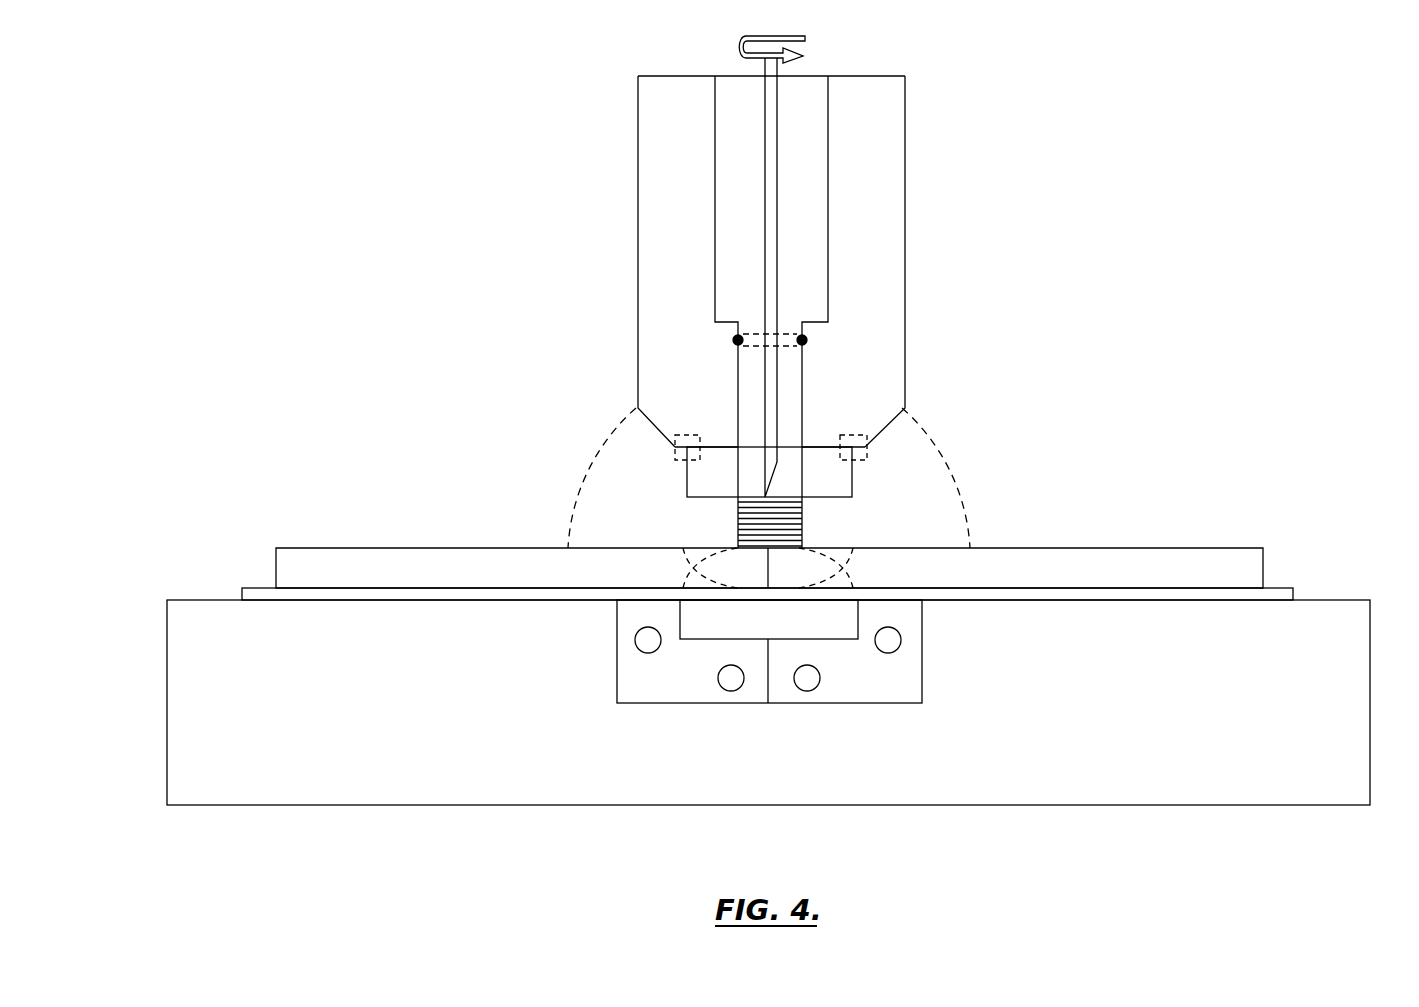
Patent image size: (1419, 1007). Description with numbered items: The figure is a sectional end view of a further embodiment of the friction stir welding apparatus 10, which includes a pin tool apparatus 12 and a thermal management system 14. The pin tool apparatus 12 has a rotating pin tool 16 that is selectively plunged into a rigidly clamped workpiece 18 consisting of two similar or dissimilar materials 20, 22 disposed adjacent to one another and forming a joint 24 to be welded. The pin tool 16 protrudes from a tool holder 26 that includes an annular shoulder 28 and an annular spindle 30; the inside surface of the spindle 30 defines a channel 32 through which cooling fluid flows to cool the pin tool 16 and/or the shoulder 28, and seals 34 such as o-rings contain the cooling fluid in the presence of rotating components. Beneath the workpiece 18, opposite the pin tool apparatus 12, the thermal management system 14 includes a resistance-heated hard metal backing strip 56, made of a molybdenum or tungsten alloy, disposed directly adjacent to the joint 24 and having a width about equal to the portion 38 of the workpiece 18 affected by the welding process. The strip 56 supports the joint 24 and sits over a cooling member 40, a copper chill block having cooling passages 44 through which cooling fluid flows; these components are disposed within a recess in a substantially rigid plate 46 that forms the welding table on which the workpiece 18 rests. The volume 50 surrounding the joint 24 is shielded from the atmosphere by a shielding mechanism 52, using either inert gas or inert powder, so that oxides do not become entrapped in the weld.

The friction stir welding apparatus 10 is at (1140, 283).
The pin tool apparatus 12 is at (925, 127).
The thermal management system 14 is at (885, 572).
The rotating pin tool 16 is at (852, 460).
The workpiece 18 is at (1175, 550).
The material 20 is at (1140, 550).
The material 22 is at (403, 548).
The joint 24 is at (768, 570).
The tool holder 26 is at (620, 242).
The annular shoulder 28 is at (802, 522).
The annular spindle 30 is at (906, 242).
The channel 32 is at (778, 103).
The seal 34 is at (810, 332).
The portion of the workpiece affected by the welding process 38 is at (700, 542).
The cooling member 40 is at (845, 705).
The cooling passage 44 is at (768, 695).
The substantially rigid plate 46 is at (365, 807).
The volume surrounding the joint 50 is at (645, 526).
The shielding mechanism 52 is at (617, 423).
The resistance-heated hard metal backing strip 56 is at (848, 640).